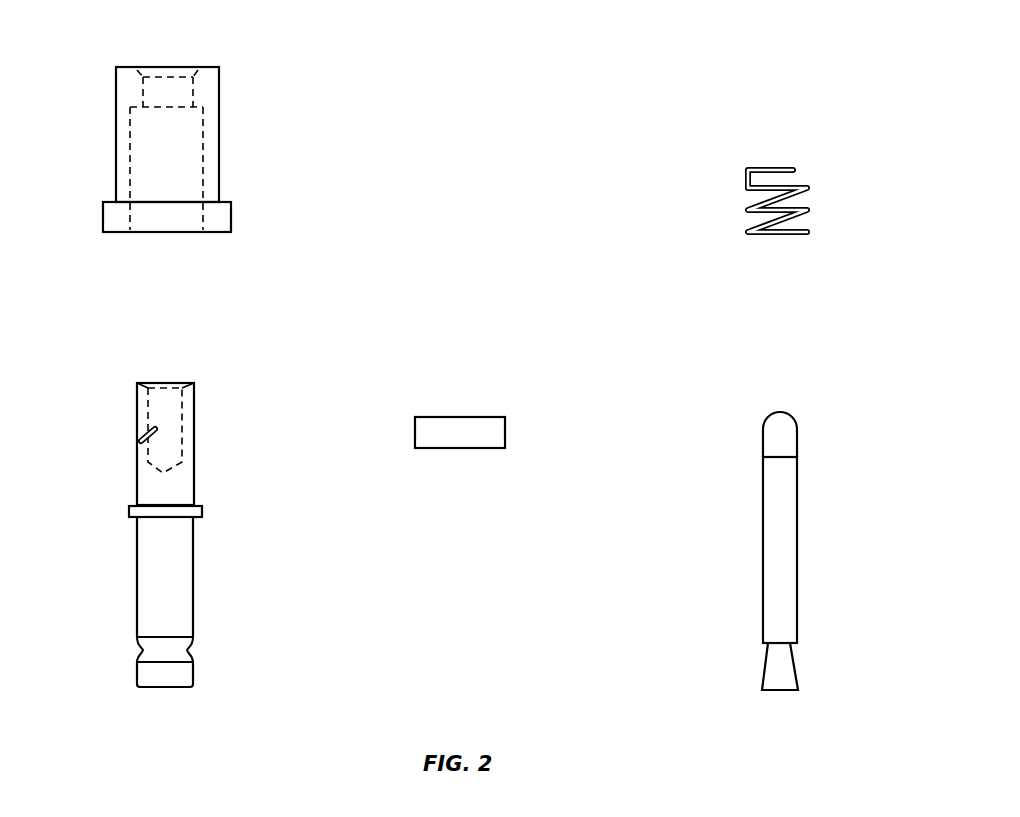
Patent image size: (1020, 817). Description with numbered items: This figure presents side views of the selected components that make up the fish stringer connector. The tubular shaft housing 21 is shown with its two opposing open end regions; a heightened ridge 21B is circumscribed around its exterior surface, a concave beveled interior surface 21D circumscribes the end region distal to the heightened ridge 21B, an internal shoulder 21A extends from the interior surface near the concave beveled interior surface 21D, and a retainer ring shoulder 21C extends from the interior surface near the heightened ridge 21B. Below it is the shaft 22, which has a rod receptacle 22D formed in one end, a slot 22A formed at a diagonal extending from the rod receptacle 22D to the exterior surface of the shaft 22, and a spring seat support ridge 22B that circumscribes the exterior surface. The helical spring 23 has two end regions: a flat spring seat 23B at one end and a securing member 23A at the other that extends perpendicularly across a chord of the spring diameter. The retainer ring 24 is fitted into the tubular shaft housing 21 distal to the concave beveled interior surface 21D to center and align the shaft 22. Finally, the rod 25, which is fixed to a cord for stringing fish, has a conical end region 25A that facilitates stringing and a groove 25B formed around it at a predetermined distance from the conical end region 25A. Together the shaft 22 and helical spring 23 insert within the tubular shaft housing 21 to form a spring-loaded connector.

The tubular shaft housing 21 is at (255, 135).
The internal shoulder 21A is at (137, 123).
The heightened ridge 21B is at (227, 220).
The retainer ring shoulder 21C is at (127, 203).
The concave beveled interior surface 21D is at (153, 70).
The shaft 22 is at (147, 578).
The slot 22A is at (140, 443).
The spring seat support ridge 22B is at (195, 511).
The rod receptacle 22D is at (172, 415).
The helical spring 23 is at (832, 180).
The securing member 23A is at (773, 165).
The spring seat 23B is at (777, 236).
The retainer ring 24 is at (458, 427).
The rod 25 is at (782, 557).
The conical end region 25A is at (779, 427).
The groove 25B is at (795, 458).